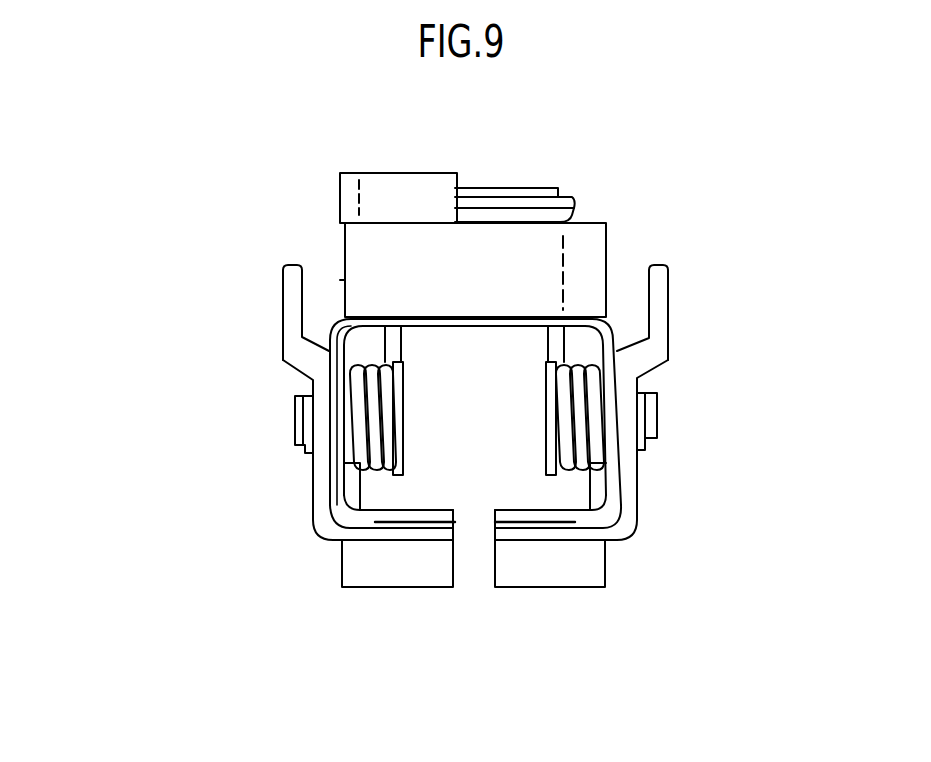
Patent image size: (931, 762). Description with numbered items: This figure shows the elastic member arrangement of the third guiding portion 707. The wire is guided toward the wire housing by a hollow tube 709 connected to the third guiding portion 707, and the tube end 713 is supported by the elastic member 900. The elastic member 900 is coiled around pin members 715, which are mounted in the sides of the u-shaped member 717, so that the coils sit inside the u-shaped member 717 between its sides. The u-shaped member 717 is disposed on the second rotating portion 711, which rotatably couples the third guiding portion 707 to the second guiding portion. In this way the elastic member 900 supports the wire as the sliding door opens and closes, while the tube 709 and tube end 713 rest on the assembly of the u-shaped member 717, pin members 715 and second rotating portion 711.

The third guiding portion 707 is at (231, 587).
The tube 709 is at (346, 195).
The second rotating portion 711 is at (602, 562).
The tube end 713 is at (603, 247).
The pin members 715 is at (297, 440).
The u-shaped member 717 is at (667, 338).
The elastic member 900 is at (358, 400).